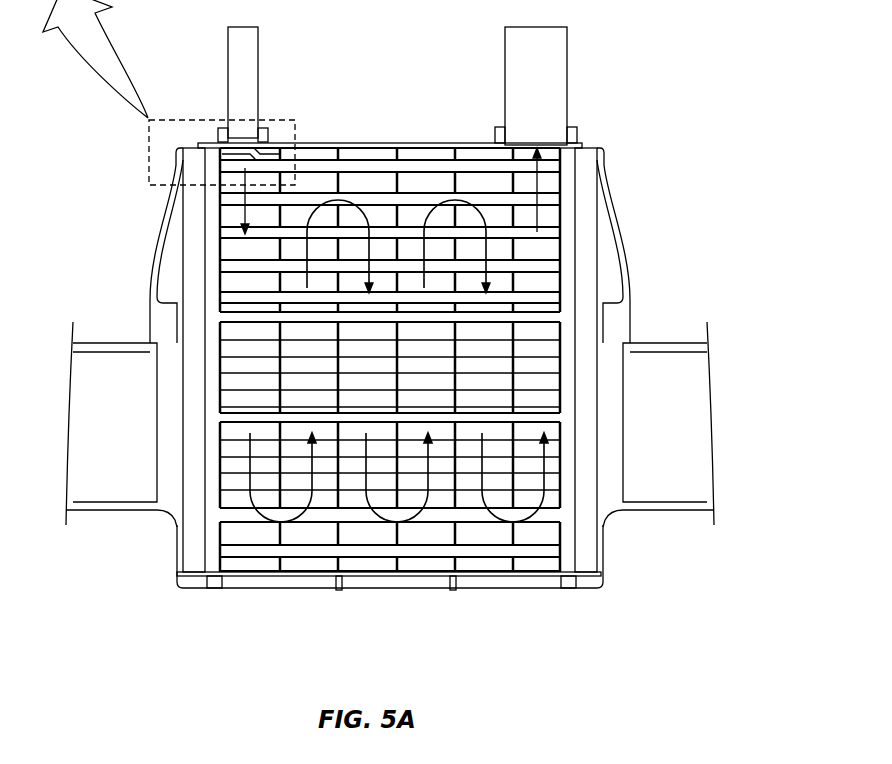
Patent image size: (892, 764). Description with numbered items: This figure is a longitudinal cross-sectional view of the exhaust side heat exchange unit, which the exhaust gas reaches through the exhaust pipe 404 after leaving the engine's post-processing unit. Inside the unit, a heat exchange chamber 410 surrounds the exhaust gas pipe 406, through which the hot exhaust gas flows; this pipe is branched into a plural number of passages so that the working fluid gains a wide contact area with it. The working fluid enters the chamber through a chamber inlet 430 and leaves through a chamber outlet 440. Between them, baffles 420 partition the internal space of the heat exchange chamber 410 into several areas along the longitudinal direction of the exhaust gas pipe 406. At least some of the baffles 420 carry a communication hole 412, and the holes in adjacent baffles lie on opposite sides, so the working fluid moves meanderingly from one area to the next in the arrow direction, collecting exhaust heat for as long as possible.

The exhaust pipe 404 is at (99, 342).
The exhaust gas pipe 406 is at (540, 400).
The heat exchange chamber 410 is at (455, 143).
The communication hole 412 is at (332, 168).
The baffle 420 is at (508, 500).
The chamber inlet 430 is at (248, 63).
The chamber outlet 440 is at (557, 70).